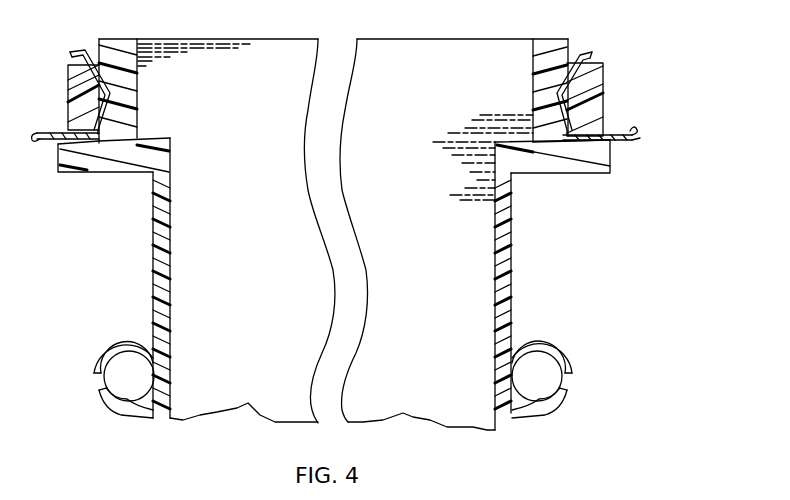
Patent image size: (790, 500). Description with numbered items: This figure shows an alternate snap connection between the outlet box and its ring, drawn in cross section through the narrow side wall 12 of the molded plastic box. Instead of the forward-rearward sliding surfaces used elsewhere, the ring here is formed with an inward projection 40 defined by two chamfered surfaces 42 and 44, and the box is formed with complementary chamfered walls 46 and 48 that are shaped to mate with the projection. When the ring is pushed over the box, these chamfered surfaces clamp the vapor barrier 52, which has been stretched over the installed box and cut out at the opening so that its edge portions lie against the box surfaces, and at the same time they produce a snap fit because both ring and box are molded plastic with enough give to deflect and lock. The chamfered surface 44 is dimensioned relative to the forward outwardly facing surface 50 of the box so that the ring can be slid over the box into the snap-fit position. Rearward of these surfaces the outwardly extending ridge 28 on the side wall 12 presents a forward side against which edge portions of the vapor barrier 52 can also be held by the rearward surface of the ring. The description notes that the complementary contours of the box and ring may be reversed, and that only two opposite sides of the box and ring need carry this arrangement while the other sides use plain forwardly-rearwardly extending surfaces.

The narrow side wall 12 is at (505, 283).
The outwardly extending ridge 28 is at (108, 163).
The inward projection 40 is at (600, 74).
The chamfered surface 42 is at (588, 62).
The chamfered surface 44 is at (600, 103).
The chamfered wall 46 is at (537, 66).
The chamfered wall 48 is at (565, 137).
The forward outwardly facing surface 50 is at (110, 346).
The vapor barrier 52 is at (638, 131).